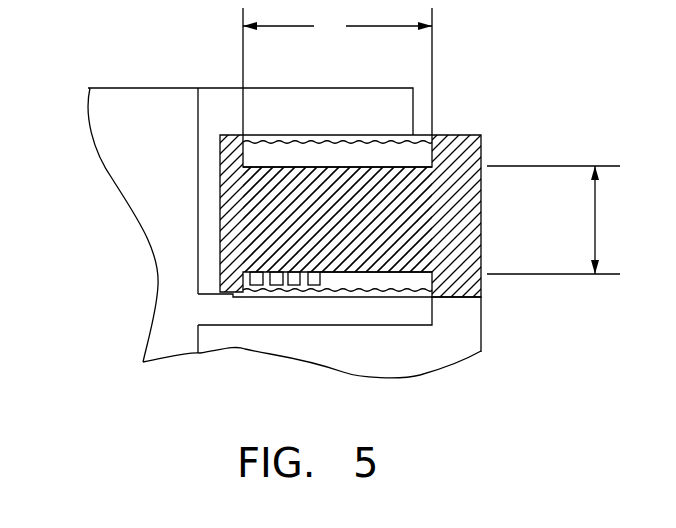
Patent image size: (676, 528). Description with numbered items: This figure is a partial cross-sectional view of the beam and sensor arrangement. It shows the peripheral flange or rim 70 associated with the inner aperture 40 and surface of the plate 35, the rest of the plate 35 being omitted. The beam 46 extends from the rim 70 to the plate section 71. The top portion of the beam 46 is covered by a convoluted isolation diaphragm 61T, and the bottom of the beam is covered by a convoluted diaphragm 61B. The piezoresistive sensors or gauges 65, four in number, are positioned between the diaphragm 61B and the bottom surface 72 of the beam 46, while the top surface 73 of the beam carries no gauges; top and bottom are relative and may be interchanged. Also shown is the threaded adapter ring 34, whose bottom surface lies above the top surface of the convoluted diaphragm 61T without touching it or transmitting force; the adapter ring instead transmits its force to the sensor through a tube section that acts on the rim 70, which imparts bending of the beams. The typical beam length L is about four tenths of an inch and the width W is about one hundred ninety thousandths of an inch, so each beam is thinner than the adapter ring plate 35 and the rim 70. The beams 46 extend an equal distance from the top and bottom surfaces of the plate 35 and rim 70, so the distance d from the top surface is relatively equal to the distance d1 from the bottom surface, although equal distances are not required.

The threaded adapter ring 34 is at (397, 88).
The plate 35 is at (388, 238).
The inner aperture 40 is at (117, 152).
The beam 46 is at (448, 240).
The convoluted isolation diaphragm (top) 61T is at (433, 137).
The convoluted diaphragm (bottom) 61B is at (288, 290).
The piezoresistive sensors or gauges 65 is at (315, 275).
The peripheral flange or rim 70 is at (235, 296).
The plate section 71 is at (457, 298).
The bottom surface of the beam 72 is at (343, 275).
The top surface of the beam 73 is at (330, 165).
The distance from top surface d is at (248, 157).
The distance from bottom surface d1 is at (250, 275).
The beam length L is at (337, 71).
The beam width W is at (553, 220).